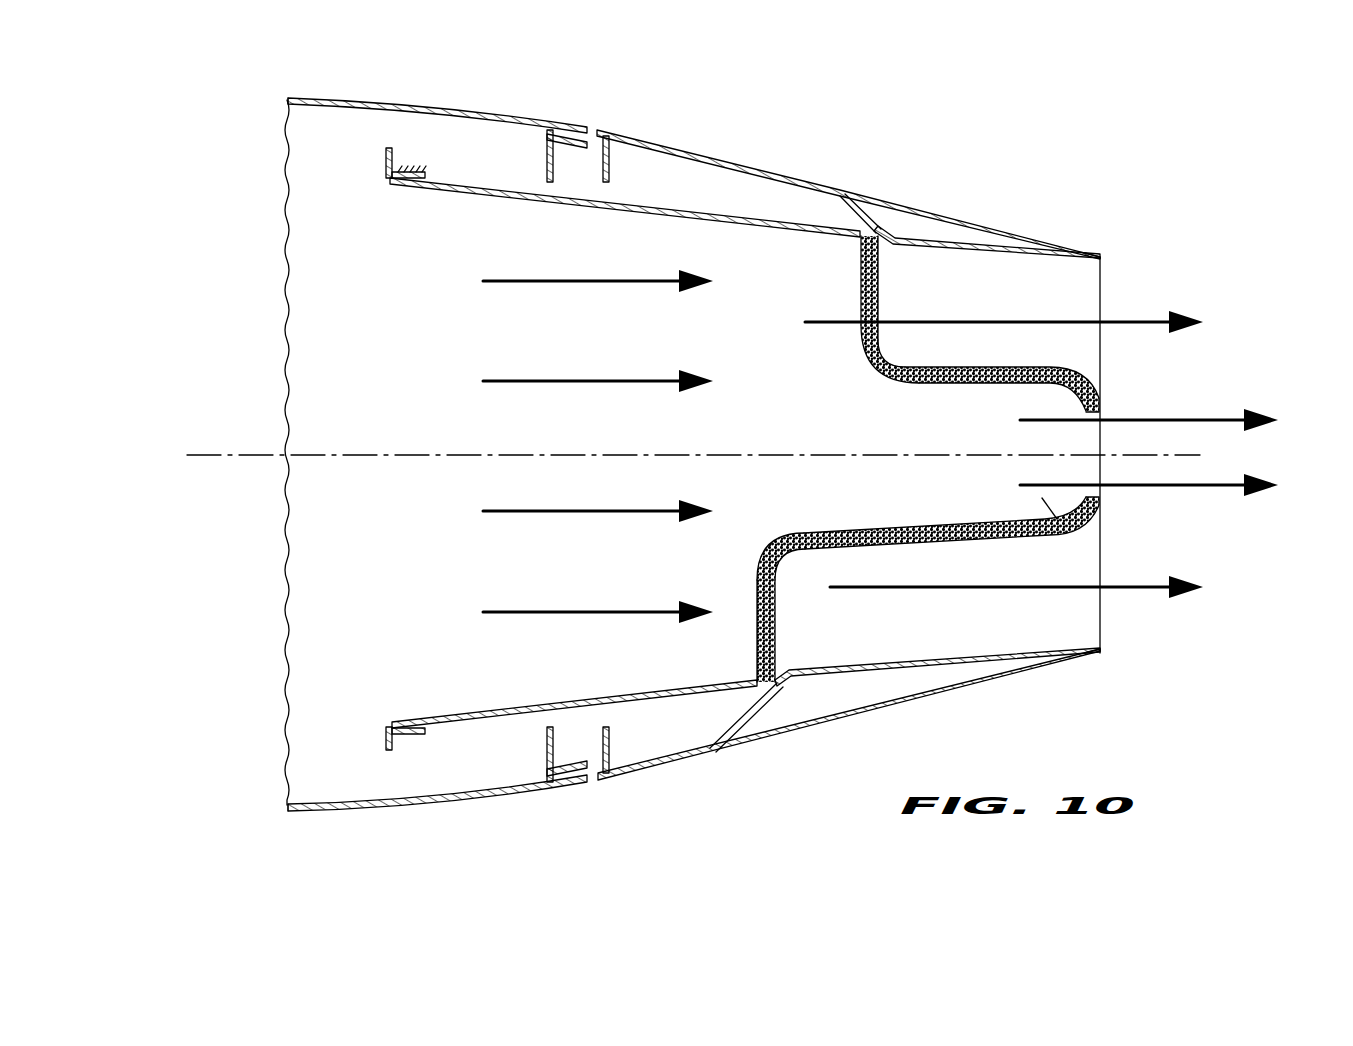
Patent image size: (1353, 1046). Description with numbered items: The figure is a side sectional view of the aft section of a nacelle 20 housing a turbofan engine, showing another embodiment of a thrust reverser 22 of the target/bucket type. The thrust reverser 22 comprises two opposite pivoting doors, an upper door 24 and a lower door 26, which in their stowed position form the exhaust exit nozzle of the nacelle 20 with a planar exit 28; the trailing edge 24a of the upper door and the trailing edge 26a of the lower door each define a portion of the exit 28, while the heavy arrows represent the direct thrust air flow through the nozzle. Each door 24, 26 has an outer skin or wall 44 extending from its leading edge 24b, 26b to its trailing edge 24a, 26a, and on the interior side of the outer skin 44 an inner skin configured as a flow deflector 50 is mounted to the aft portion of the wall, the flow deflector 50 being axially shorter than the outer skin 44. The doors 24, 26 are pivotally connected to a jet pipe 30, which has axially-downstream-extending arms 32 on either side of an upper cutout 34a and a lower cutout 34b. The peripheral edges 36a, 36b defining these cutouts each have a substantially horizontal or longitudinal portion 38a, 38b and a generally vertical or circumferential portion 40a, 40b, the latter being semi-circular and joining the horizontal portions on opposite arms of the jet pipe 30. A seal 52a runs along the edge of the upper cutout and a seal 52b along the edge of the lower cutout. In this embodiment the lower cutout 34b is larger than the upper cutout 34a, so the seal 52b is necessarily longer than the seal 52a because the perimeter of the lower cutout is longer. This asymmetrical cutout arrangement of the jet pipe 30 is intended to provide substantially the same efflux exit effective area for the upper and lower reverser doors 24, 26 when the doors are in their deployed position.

The nacelle 20 is at (258, 784).
The thrust reverser 22 is at (772, 775).
The upper pivoting door 24 is at (806, 165).
The trailing edge of upper door 24a is at (1104, 258).
The leading edge of upper door 24b is at (598, 130).
The lower pivoting door 26 is at (695, 772).
The trailing edge of lower door 26a is at (1103, 650).
The leading edge of lower door 26b is at (596, 775).
The planar exit 28 is at (1255, 350).
The jet pipe 30 is at (453, 712).
The axially-downstream-extending arm 32 is at (1083, 534).
The upper cutout 34a is at (1051, 292).
The lower cutout 34b is at (984, 620).
The peripheral edge of upper cutout 36a is at (952, 384).
The peripheral edge of lower cutout 36b is at (937, 523).
The horizontal portion of upper cutout edge 38a is at (956, 358).
The horizontal portion of lower cutout edge 38b is at (951, 550).
The vertical portion of upper cutout edge 40a is at (884, 280).
The vertical portion of lower cutout edge 40b is at (784, 623).
The outer skin 44 is at (702, 148).
The flow deflector 50 is at (948, 242).
The upper seal 52a is at (876, 363).
The lower seal 52b is at (778, 537).